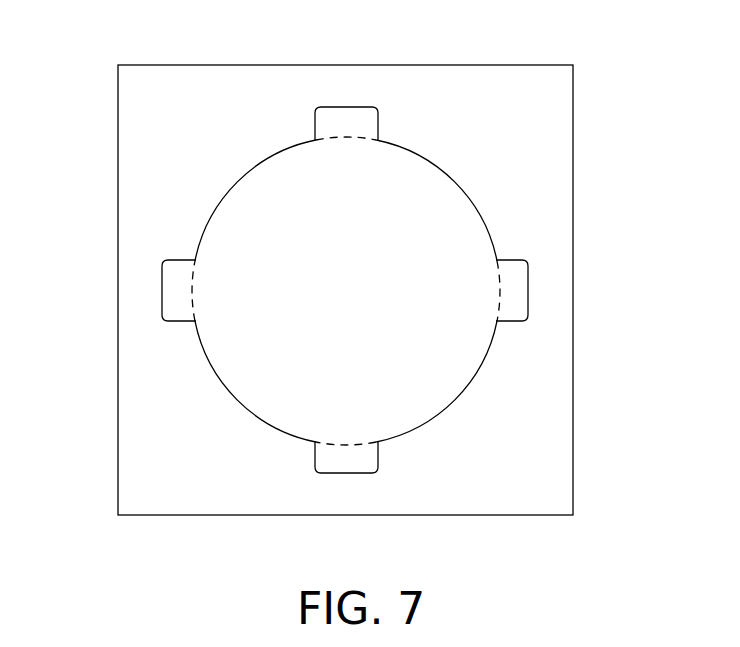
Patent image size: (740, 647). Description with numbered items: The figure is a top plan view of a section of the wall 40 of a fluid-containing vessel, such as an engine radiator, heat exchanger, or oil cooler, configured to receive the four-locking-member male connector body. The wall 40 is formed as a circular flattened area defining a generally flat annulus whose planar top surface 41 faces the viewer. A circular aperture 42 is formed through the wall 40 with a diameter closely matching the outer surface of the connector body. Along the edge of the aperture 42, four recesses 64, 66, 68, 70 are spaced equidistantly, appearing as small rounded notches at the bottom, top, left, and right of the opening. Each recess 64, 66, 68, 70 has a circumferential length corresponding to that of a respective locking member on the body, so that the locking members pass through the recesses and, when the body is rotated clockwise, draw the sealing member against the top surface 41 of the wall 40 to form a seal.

The wall 40 is at (558, 65).
The planar top surface 41 is at (554, 432).
The aperture 42 is at (475, 208).
The recess 64 is at (342, 453).
The recess 66 is at (345, 127).
The recess 68 is at (186, 305).
The recess 70 is at (512, 292).